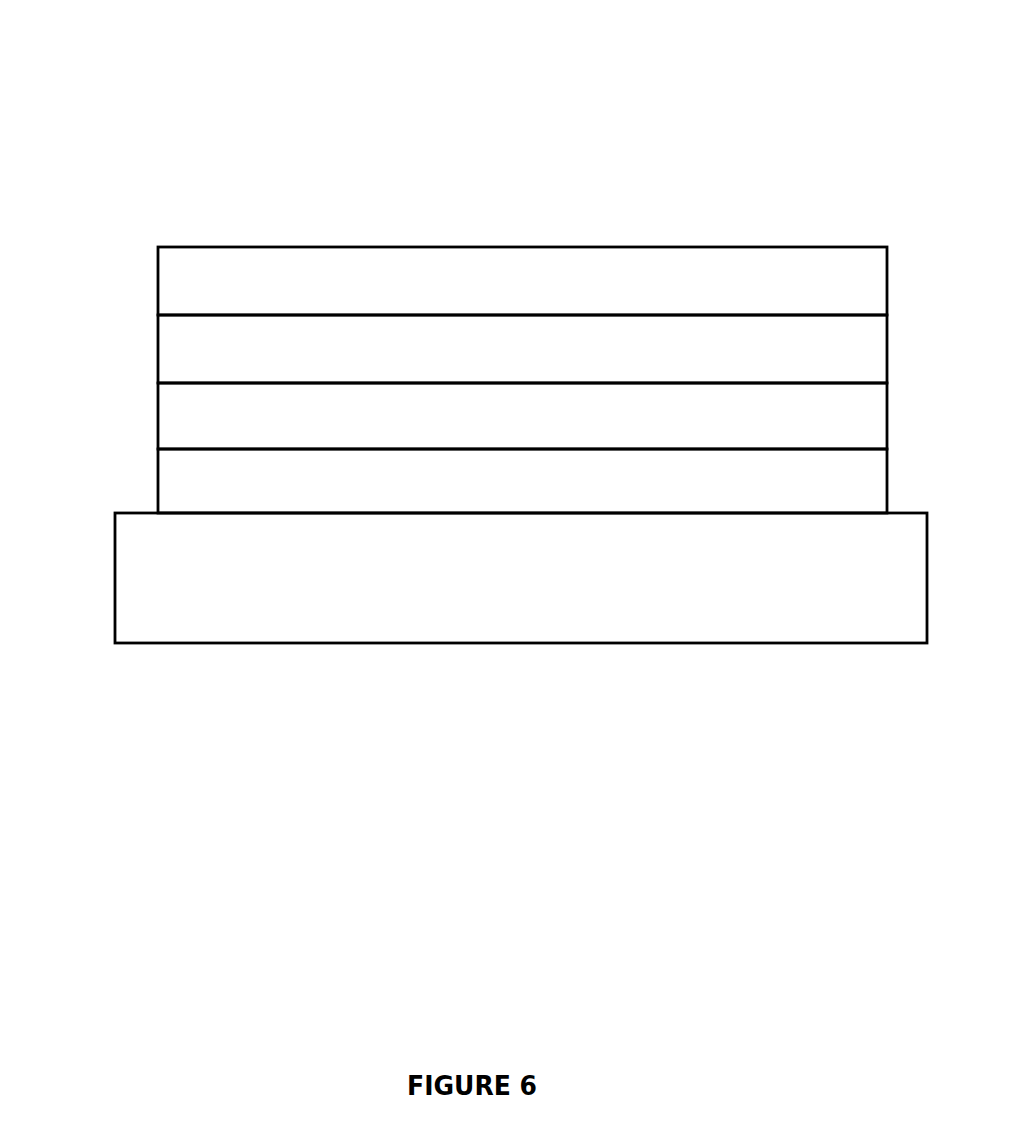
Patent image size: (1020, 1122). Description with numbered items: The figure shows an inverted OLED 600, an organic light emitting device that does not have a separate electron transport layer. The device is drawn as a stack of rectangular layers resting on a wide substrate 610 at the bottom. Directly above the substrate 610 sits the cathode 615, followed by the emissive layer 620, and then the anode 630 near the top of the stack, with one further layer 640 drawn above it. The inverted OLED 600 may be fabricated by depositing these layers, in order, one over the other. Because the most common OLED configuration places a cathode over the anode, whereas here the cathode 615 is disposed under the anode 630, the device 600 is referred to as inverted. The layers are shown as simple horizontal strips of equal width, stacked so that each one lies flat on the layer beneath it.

The inverted OLED 600 is at (330, 182).
The substrate 610 is at (468, 644).
The cathode 615 is at (158, 481).
The emissive layer 620 is at (158, 417).
The anode 630 is at (158, 349).
The fourth layer 640 is at (158, 283).